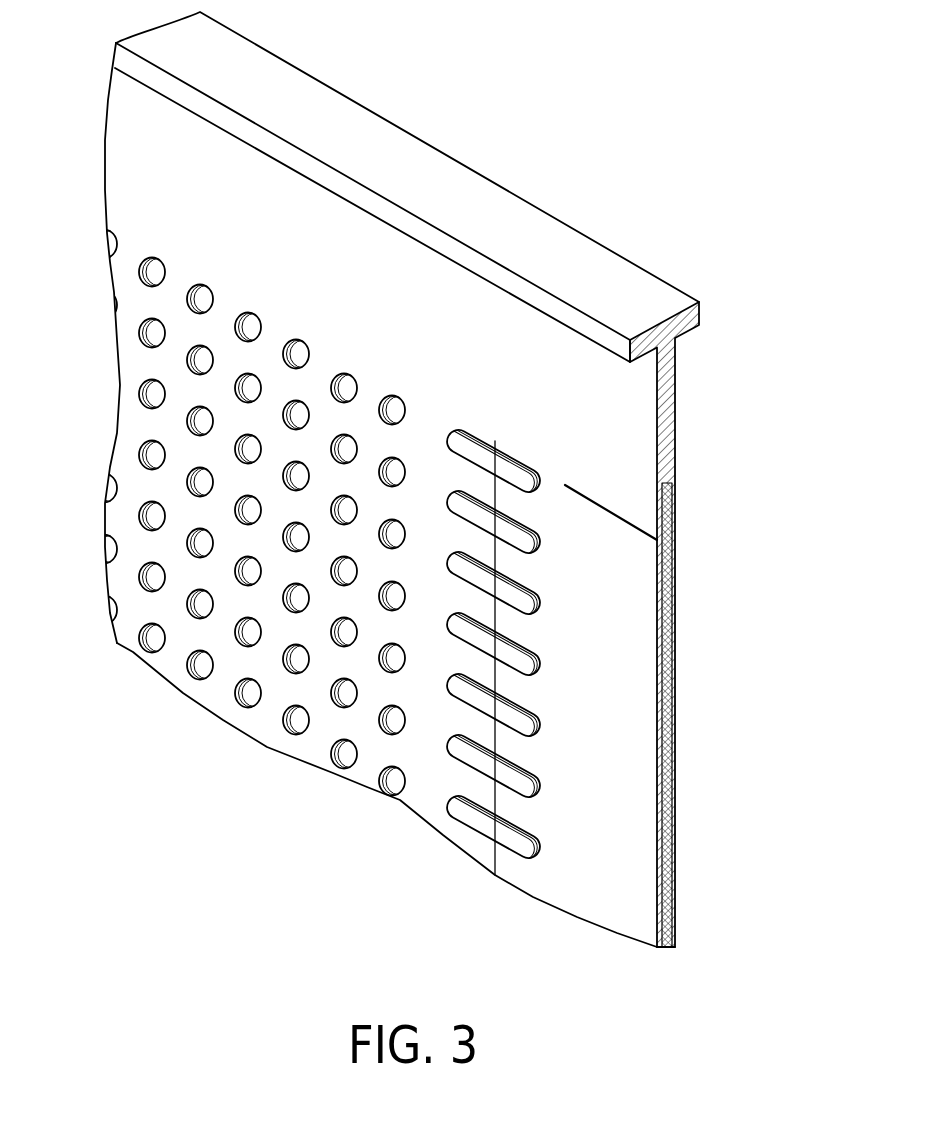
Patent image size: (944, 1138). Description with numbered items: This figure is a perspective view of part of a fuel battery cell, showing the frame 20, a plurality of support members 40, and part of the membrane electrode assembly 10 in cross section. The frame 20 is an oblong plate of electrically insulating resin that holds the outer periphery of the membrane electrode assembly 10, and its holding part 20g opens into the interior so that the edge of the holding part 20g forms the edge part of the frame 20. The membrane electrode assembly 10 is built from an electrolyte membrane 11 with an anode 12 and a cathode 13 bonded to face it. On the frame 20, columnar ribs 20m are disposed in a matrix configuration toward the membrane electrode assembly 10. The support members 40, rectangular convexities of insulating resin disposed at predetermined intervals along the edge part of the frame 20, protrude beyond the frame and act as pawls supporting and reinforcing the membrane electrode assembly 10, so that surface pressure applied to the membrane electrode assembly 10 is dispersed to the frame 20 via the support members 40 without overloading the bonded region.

The membrane electrode assembly 10 is at (718, 653).
The electrolyte membrane 11 is at (663, 947).
The anode 12 is at (675, 943).
The cathode 13 is at (657, 948).
The frame 20 is at (288, 62).
The ribs 20m is at (239, 316).
The holding part 20g is at (598, 650).
The support members 40 is at (532, 553).